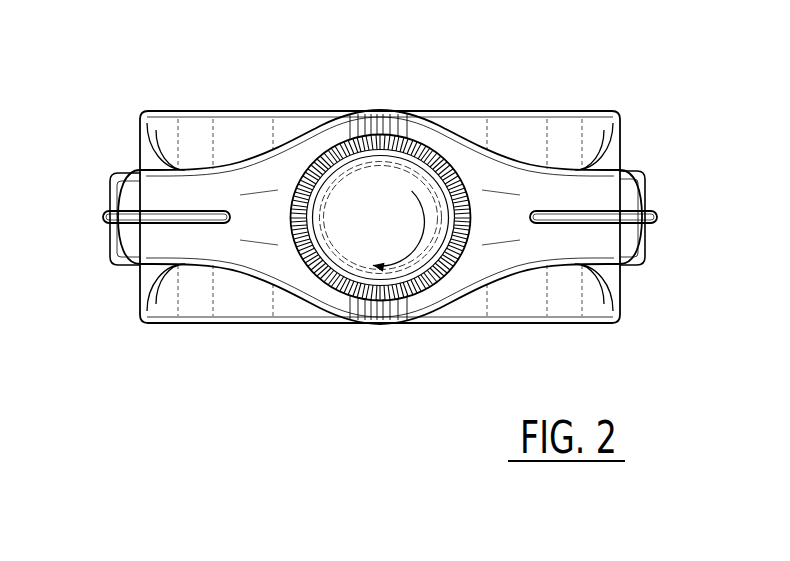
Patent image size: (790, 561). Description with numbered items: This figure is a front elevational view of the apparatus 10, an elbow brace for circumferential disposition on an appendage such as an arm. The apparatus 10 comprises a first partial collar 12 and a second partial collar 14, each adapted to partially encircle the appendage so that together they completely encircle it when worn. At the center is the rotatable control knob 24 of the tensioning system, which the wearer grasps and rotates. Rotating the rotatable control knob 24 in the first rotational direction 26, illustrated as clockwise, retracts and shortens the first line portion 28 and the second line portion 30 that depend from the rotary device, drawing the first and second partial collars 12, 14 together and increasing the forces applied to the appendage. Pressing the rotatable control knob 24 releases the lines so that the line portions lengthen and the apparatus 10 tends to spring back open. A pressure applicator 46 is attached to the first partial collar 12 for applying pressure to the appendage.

The apparatus 10 is at (521, 64).
The first partial collar 12 is at (267, 268).
The second partial collar 14 is at (617, 274).
The rotatable control knob 24 is at (460, 180).
The first rotational direction 26 is at (381, 218).
The first line portion 28 is at (644, 200).
The second line portion 30 is at (122, 172).
The pressure applicator 46 is at (380, 312).